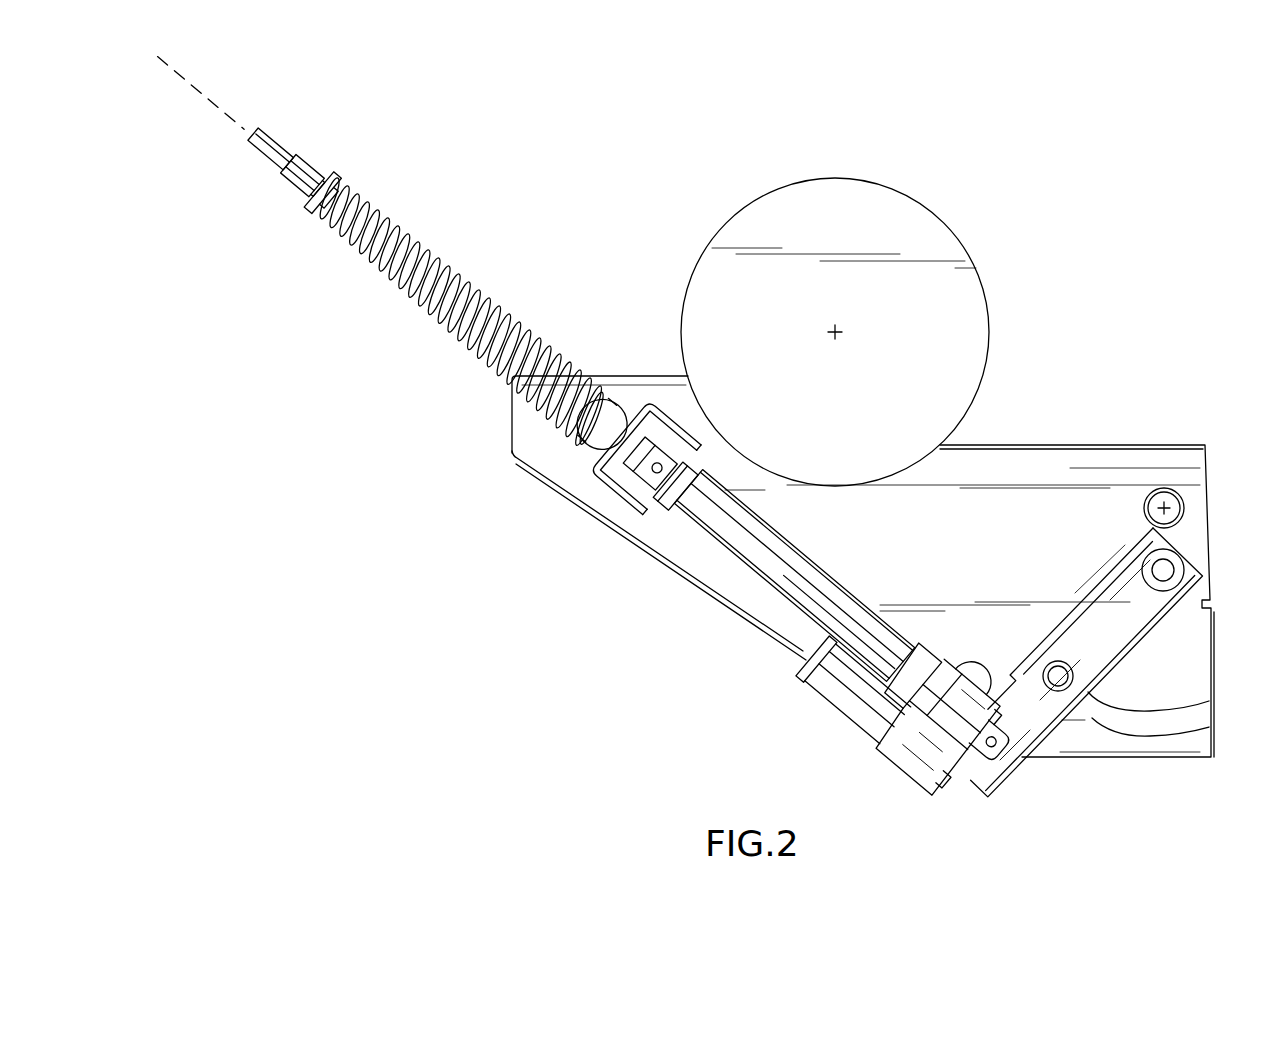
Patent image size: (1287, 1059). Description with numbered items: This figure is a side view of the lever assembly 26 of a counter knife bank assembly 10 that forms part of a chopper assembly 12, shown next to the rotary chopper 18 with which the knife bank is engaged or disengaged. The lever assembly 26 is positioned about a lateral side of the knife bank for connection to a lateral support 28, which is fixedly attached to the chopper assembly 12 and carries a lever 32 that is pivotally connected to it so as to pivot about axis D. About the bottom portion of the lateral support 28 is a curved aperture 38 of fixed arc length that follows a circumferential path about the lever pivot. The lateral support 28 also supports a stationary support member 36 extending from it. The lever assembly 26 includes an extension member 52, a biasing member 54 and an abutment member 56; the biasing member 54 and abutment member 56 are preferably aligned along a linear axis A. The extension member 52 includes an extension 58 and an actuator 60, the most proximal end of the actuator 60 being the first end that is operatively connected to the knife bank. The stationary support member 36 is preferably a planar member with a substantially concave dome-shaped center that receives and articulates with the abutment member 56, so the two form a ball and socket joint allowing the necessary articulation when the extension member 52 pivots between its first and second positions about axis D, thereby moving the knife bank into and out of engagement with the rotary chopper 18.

The counter knife bank assembly 10 is at (672, 661).
The chopper assembly 12 is at (1030, 234).
The rotary chopper 18 is at (933, 216).
The lever assembly 26 is at (952, 818).
The lateral support 28 is at (1073, 447).
The lever 32 is at (1072, 700).
The stationary support member 36 is at (593, 476).
The curved aperture 38 is at (1176, 702).
The extension member 52 is at (657, 378).
The biasing member 54 is at (378, 212).
The abutment member 56 is at (588, 452).
The extension 58 is at (279, 139).
The actuator 60 is at (806, 614).
The linear axis A is at (201, 92).
The axis D is at (1163, 570).